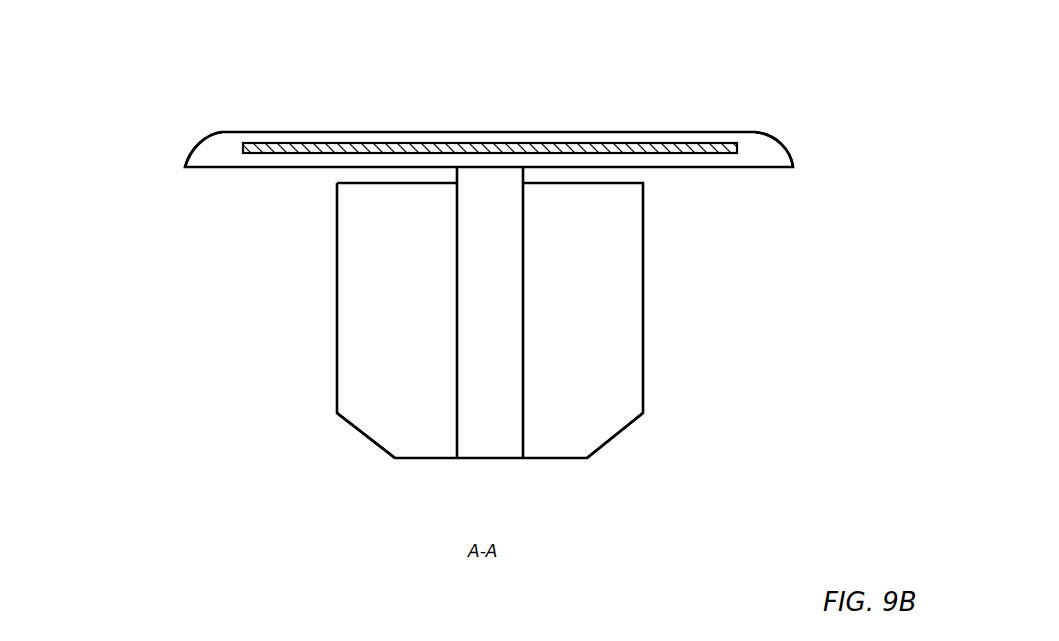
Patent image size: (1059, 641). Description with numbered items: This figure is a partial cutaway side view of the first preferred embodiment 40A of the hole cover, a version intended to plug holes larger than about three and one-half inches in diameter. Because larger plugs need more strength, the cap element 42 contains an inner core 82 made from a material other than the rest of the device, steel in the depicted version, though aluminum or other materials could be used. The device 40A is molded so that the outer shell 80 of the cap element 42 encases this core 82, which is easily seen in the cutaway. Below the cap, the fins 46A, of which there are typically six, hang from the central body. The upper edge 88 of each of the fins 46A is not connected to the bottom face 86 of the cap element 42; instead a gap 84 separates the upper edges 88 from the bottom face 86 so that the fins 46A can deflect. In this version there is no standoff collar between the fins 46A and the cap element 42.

The first preferred embodiment of the hole cover 40A is at (898, 27).
The cap element 42 is at (188, 136).
The outer shell 80 is at (795, 166).
The inner core 82 is at (683, 138).
The gap 84 is at (646, 175).
The bottom face 86 is at (206, 168).
The upper edge 88 is at (365, 192).
The fins 46A is at (370, 425).